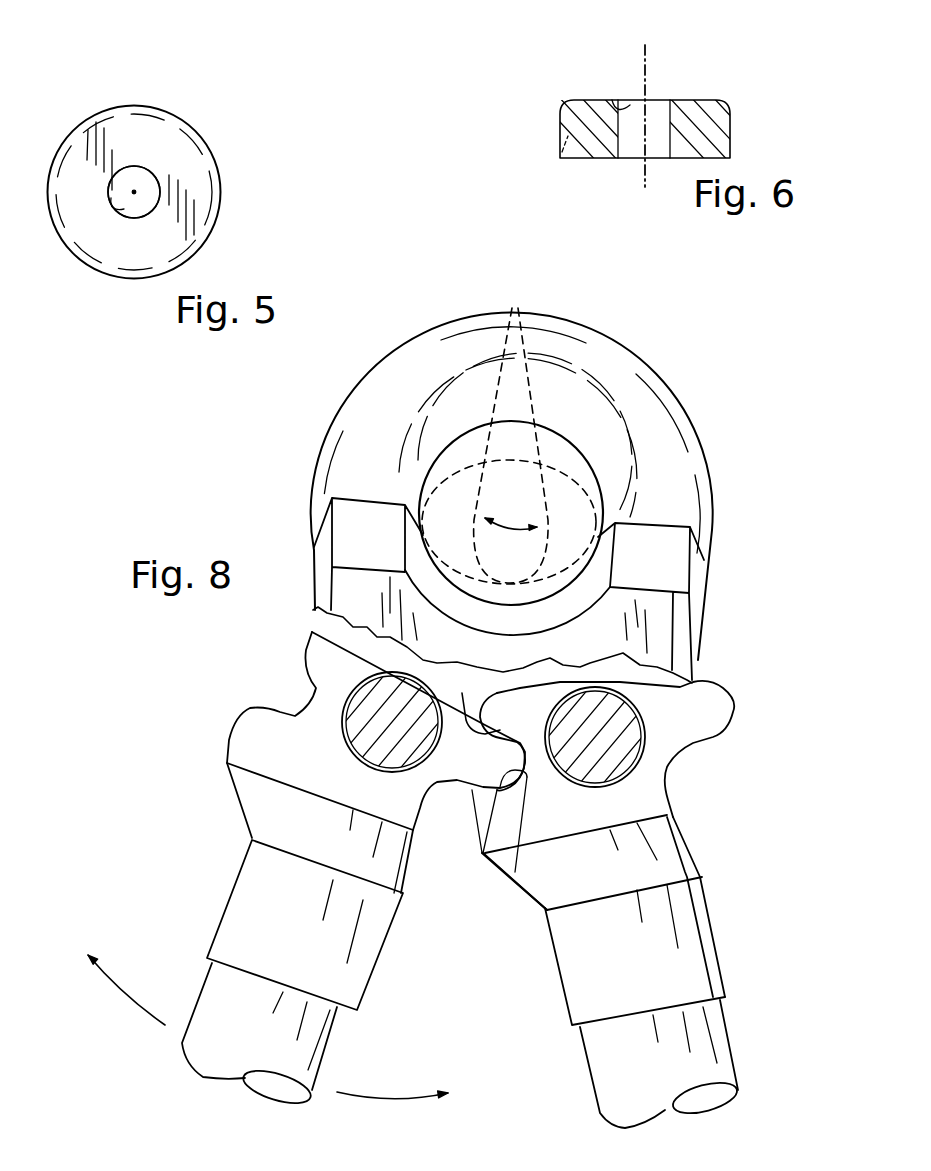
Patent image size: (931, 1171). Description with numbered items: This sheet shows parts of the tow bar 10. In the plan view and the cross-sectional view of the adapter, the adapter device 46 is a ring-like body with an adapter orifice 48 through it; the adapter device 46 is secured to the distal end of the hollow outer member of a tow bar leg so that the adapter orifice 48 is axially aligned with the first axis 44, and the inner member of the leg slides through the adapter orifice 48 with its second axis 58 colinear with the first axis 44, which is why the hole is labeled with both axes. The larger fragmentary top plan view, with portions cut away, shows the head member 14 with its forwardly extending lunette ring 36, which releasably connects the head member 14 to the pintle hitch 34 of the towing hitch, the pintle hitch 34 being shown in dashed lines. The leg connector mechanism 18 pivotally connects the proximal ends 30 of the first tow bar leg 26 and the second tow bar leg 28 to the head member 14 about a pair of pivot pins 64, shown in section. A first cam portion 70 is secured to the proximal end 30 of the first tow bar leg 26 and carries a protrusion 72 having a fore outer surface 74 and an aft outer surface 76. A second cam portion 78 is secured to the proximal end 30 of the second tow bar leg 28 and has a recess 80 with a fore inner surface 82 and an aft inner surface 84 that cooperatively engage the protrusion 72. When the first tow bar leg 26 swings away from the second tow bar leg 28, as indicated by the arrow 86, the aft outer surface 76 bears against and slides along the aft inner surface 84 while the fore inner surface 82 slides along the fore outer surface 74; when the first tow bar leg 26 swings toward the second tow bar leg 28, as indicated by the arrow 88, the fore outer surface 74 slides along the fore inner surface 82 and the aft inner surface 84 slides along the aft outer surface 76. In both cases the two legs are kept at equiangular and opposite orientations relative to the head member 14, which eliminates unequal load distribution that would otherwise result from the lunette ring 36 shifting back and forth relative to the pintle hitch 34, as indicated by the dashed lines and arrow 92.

In FIG. 5, the tow bar 10 is at (80, 81).
In FIG. 6, the tow bar 10 is at (545, 90).
In FIG. 8, the tow bar 10 is at (749, 343).
In FIG. 8, the head member 14 is at (672, 607).
In FIG. 8, the leg connector mechanism 18 is at (757, 722).
In FIG. 8, the first tow bar leg 26 is at (327, 1037).
In FIG. 8, the second tow bar leg 28 is at (707, 1030).
In FIG. 8, the proximal end 30 is at (210, 990).
In FIG. 8, the pintle hitch 34 is at (509, 432).
In FIG. 8, the lunette ring 36 is at (605, 367).
In FIG. 5, the first axis 44 is at (134, 192).
In FIG. 6, the first axis 44 is at (646, 72).
In FIG. 5, the adapter device 46 is at (193, 128).
In FIG. 6, the adapter device 46 is at (728, 104).
In FIG. 5, the adapter orifice 48 is at (123, 203).
In FIG. 6, the adapter orifice 48 is at (628, 104).
In FIG. 5, the second axis 58 is at (134, 192).
In FIG. 8, the pivot pins 64 is at (363, 713).
In FIG. 8, the first cam portion 70 is at (237, 747).
In FIG. 8, the protrusion 72 is at (486, 766).
In FIG. 8, the fore outer surface 74 is at (517, 745).
In FIG. 8, the aft outer surface 76 is at (468, 800).
In FIG. 8, the second cam portion 78 is at (673, 845).
In FIG. 8, the recess 80 is at (517, 886).
In FIG. 8, the fore inner surface 82 is at (467, 713).
In FIG. 8, the aft inner surface 84 is at (482, 855).
In FIG. 8, the arrow 86 is at (125, 993).
In FIG. 8, the arrow 88 is at (400, 1103).
In FIG. 8, the dashed lines and arrow 92 is at (512, 527).